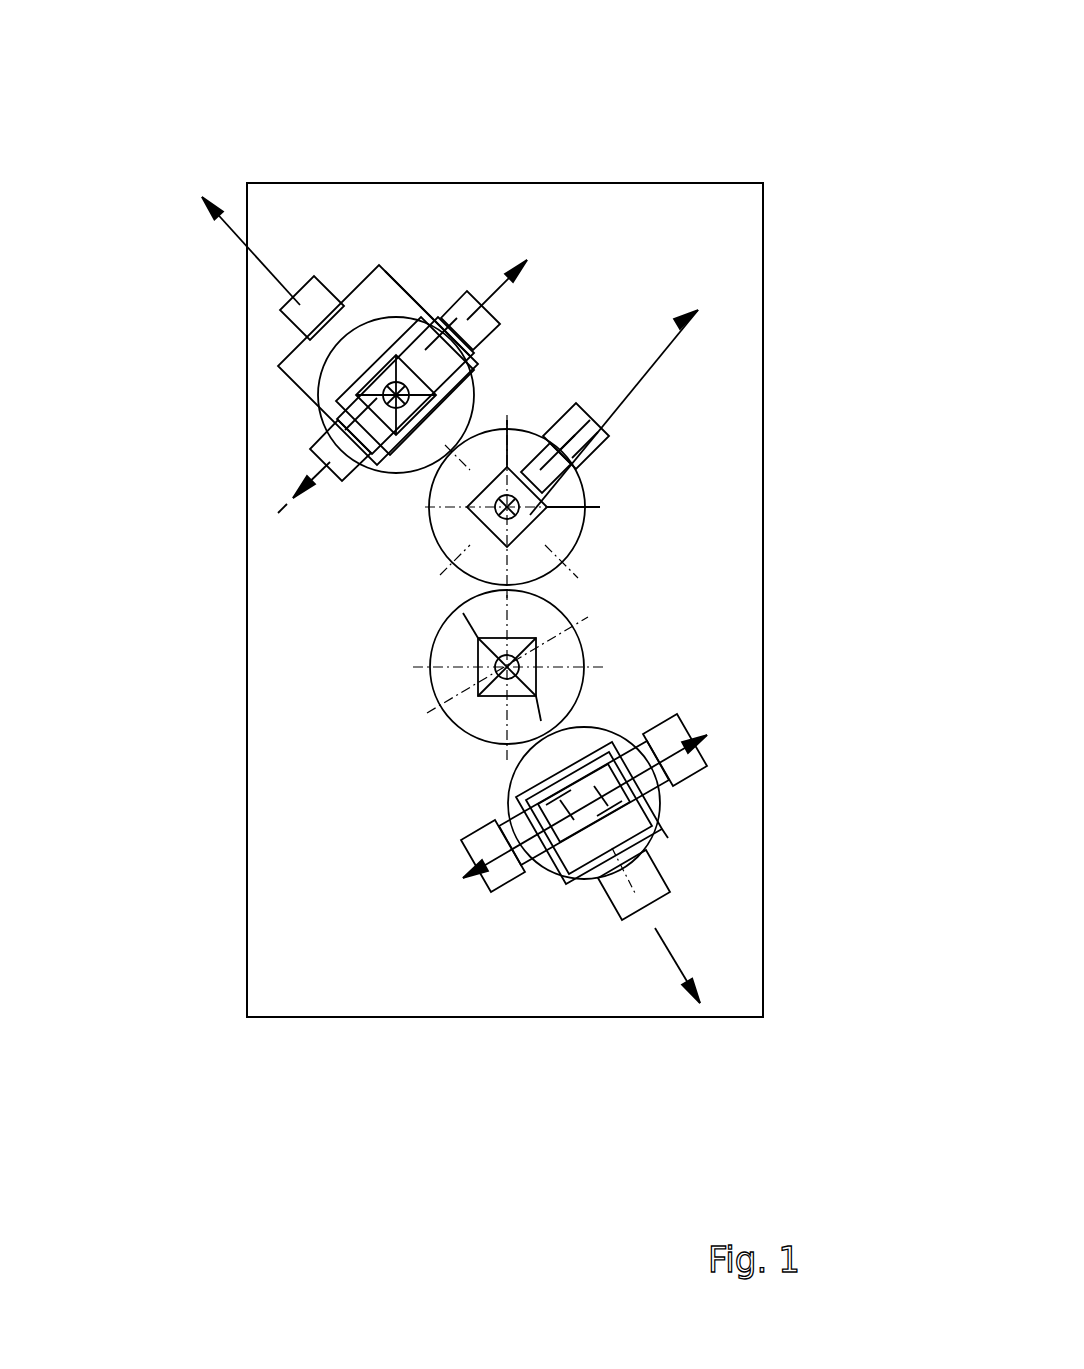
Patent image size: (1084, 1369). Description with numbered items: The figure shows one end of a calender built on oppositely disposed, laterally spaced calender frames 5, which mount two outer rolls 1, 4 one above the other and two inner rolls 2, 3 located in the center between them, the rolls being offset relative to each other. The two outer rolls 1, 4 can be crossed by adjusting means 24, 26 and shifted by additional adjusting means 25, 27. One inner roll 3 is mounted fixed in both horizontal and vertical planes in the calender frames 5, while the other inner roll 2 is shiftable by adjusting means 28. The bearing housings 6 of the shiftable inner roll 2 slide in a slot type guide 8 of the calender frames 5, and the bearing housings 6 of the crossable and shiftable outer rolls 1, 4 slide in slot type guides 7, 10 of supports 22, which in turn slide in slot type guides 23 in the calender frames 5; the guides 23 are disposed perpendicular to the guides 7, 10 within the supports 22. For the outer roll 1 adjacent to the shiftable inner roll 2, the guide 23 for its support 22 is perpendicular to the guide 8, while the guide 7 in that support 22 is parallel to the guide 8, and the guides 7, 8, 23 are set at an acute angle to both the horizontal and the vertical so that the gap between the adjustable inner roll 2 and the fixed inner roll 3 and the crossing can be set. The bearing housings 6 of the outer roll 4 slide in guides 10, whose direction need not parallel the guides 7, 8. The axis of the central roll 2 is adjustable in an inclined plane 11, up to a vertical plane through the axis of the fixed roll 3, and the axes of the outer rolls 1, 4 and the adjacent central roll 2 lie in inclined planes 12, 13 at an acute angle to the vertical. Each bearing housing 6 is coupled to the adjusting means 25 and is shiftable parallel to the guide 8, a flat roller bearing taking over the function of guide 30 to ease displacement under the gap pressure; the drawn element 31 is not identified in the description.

The outer roll 1 is at (601, 168).
The inner roll 2 is at (567, 528).
The inner roll 3 is at (660, 671).
The outer roll 4 is at (381, 850).
The calender frame 5 is at (358, 948).
The bearing housing 6 is at (383, 393).
The slot type guide 7 is at (400, 325).
The slot type guide 8 is at (723, 355).
The slot type guide 10 is at (663, 822).
The inclined plane 11 is at (707, 307).
The inclined plane 12 is at (460, 460).
The inclined plane 13 is at (540, 720).
The support 22 is at (327, 417).
The slot type guide 23 is at (393, 277).
The adjusting means 24 is at (459, 316).
The adjusting means 25 is at (297, 310).
The adjusting means 26 is at (680, 772).
The adjusting means 27 is at (623, 900).
The adjusting means 28 is at (578, 404).
The guide 30 is at (312, 256).
The holder 31 is at (665, 827).